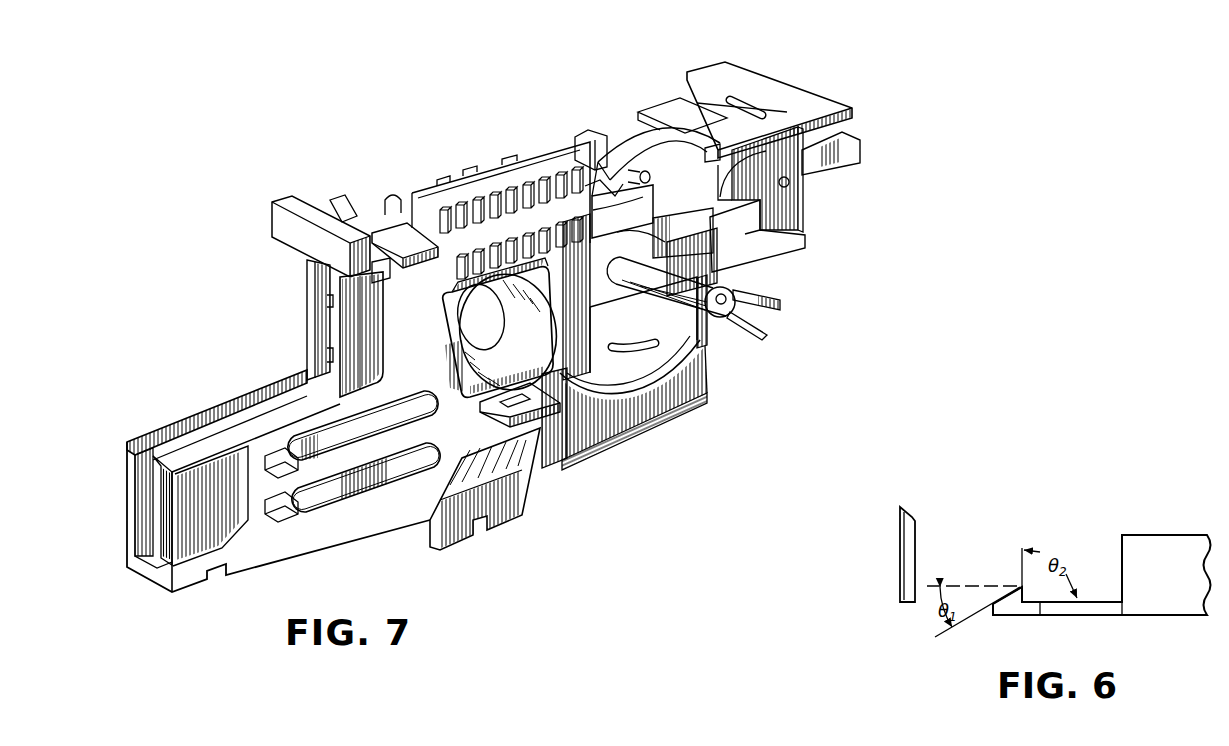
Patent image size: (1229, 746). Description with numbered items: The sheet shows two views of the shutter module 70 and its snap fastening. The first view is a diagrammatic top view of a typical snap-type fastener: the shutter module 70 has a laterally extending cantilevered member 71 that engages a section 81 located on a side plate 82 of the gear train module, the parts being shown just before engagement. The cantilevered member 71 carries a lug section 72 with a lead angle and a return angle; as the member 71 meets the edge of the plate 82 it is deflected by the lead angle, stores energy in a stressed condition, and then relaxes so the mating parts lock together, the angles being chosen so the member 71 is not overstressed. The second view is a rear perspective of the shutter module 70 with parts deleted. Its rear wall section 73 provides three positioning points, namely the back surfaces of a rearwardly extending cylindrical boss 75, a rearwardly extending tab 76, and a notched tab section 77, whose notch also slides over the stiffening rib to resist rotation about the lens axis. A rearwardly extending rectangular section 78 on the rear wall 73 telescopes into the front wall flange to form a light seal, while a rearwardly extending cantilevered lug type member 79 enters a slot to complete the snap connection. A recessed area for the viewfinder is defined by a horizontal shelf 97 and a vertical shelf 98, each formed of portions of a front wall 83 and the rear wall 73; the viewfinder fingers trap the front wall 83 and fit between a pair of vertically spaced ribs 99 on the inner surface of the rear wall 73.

In FIG. 7, the shutter module 70 is at (792, 78).
In FIG. 6, the shutter module 70 is at (1174, 620).
In FIG. 6, the cantilevered member 71 is at (1083, 605).
In FIG. 6, the lug section 72 is at (1012, 605).
In FIG. 7, the rear wall section 73 is at (260, 543).
In FIG. 7, the cylindrical boss 75 is at (650, 172).
In FIG. 7, the rearwardly extending tab 76 is at (407, 247).
In FIG. 7, the notched tab section 77 is at (522, 508).
In FIG. 7, the rectangular section 78 is at (467, 397).
In FIG. 7, the cantilevered lug type member 79 is at (500, 417).
In FIG. 6, the section 81 is at (902, 592).
In FIG. 6, the side plate 82 is at (905, 530).
In FIG. 7, the front wall 83 is at (217, 410).
In FIG. 7, the horizontal shelf 97 is at (150, 437).
In FIG. 7, the vertical shelf 98 is at (308, 285).
In FIG. 7, the ribs 99 is at (330, 305).